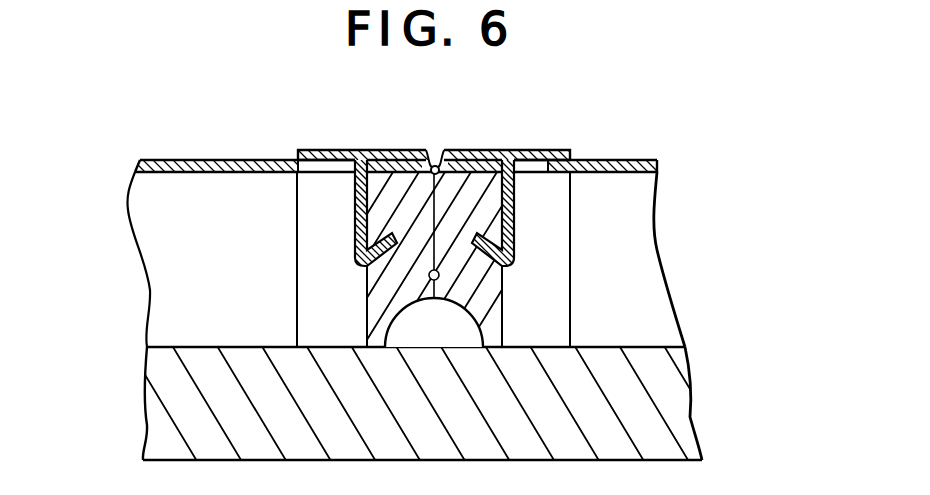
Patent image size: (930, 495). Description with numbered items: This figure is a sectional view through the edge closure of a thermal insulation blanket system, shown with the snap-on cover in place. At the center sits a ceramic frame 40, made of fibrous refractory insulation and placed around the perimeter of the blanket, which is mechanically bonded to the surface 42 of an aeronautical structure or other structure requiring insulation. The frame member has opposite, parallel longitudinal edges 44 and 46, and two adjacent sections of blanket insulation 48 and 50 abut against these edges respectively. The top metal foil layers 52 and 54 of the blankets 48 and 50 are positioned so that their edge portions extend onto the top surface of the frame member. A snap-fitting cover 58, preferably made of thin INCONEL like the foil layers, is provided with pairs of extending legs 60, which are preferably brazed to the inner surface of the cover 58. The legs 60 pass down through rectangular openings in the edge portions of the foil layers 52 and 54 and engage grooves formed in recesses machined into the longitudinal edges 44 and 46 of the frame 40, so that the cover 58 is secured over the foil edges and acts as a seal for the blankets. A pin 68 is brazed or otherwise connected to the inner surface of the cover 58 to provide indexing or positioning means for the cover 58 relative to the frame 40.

The ceramic frame 40 is at (585, 207).
The surface 42 is at (630, 347).
The longitudinal edge 44 is at (297, 313).
The longitudinal edge 46 is at (573, 292).
The blanket insulation 48 is at (182, 205).
The blanket insulation 50 is at (617, 243).
The top metal foil layer 52 is at (273, 160).
The top metal foil layer 54 is at (600, 160).
The snap-fitting cover 58 is at (463, 150).
The extending legs 60 is at (513, 177).
The pin 68 is at (436, 153).